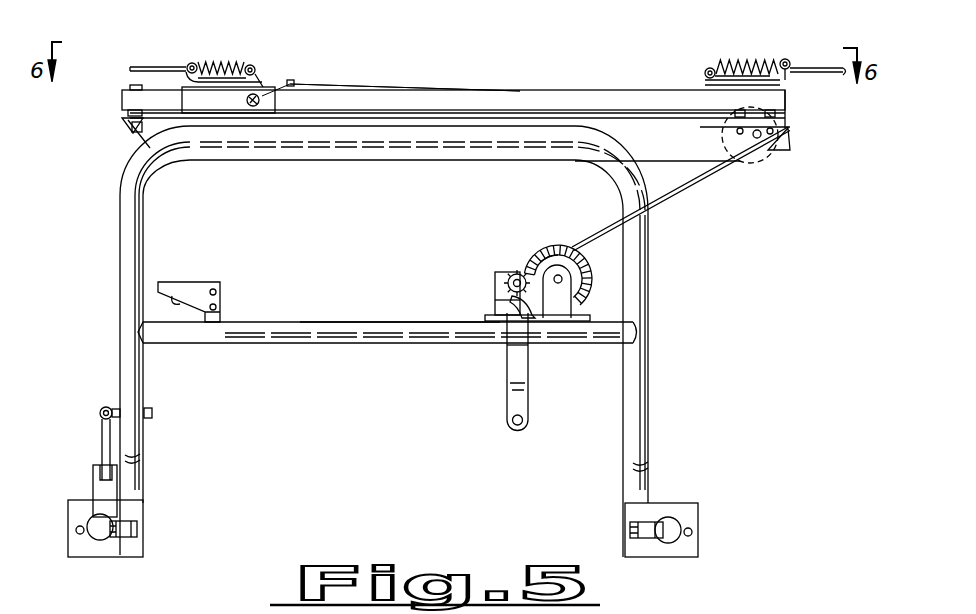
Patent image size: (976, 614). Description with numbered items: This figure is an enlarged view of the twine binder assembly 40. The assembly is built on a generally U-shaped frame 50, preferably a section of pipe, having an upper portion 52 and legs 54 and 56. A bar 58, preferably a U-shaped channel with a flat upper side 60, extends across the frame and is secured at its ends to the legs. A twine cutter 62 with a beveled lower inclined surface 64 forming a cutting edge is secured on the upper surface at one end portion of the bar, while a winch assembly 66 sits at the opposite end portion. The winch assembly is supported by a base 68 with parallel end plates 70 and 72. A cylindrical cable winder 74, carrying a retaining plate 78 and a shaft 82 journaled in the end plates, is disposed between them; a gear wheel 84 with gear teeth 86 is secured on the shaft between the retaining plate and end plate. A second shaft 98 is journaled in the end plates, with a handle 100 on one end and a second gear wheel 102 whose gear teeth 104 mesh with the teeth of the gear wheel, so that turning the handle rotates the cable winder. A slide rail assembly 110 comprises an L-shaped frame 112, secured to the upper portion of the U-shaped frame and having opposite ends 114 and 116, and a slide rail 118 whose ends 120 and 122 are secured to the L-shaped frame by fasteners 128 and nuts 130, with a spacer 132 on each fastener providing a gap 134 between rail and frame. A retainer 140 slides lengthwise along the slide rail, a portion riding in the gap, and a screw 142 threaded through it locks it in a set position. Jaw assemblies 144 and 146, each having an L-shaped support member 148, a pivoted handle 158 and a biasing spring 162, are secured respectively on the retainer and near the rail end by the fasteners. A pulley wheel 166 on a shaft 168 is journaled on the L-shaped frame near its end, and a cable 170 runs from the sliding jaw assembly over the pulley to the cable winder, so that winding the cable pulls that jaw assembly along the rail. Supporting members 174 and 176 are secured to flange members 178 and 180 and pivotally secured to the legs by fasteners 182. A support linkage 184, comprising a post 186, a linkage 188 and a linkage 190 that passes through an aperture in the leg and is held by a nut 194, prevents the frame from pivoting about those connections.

The twine binder assembly 40 is at (445, 88).
The U-shaped frame 50 is at (648, 470).
The upper portion 52 is at (350, 136).
The leg 54 is at (133, 370).
The leg 56 is at (632, 432).
The bar 58 is at (292, 332).
The upper side 60 is at (322, 322).
The twine cutter 62 is at (198, 290).
The lower inclined surface 64 is at (175, 298).
The winch assembly 66 is at (490, 282).
The base 68 is at (490, 318).
The end plate 70 is at (500, 298).
The end plate 72 is at (536, 318).
The cable winder 74 is at (598, 280).
The retaining plate 78 is at (565, 245).
The shaft 82 is at (562, 282).
The gear wheel 84 is at (566, 262).
The gear teeth 86 is at (551, 244).
The shaft 98 is at (505, 346).
The handle 100 is at (526, 407).
The second gear wheel 102 is at (512, 278).
The gear teeth 104 is at (521, 272).
The slide rail assembly 110 is at (525, 92).
The L-shaped frame 112 is at (517, 153).
The end 114 is at (125, 120).
The end 116 is at (790, 126).
The slide rail 118 is at (535, 100).
The end 120 is at (120, 93).
The end 122 is at (786, 101).
The fasteners 128 is at (145, 142).
The nuts 130 is at (130, 130).
The spacer 132 is at (125, 104).
The gap 134 is at (395, 113).
The retainer 140 is at (210, 105).
The screw 142 is at (258, 100).
The jaw assembly 144 is at (252, 64).
The jaw assembly 146 is at (772, 62).
The L-shaped support member 148 is at (186, 62).
The handle 158 is at (150, 68).
The spring 162 is at (222, 63).
The pulley wheel 166 is at (772, 152).
The shaft 168 is at (755, 138).
The cable 170 is at (665, 207).
The supporting member 174 is at (98, 532).
The supporting member 176 is at (672, 526).
The flange member 178 is at (128, 553).
The flange member 180 is at (680, 505).
The fasteners 182 is at (112, 545).
The support linkage 184 is at (100, 450).
The post 186 is at (98, 490).
The linkage 188 is at (102, 432).
The linkage 190 is at (112, 407).
The nut 194 is at (150, 412).